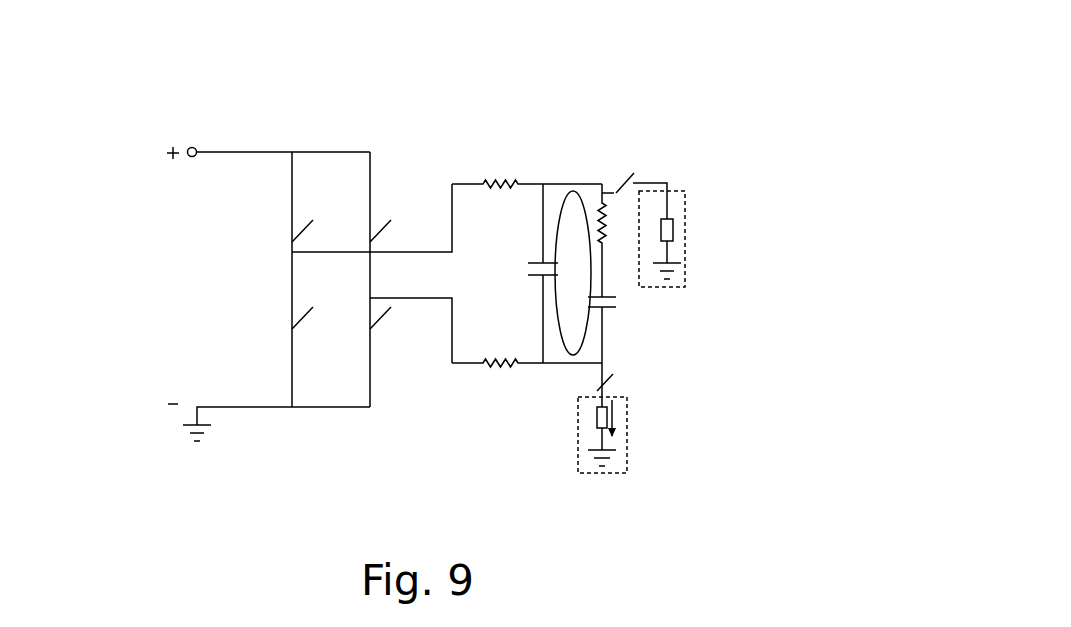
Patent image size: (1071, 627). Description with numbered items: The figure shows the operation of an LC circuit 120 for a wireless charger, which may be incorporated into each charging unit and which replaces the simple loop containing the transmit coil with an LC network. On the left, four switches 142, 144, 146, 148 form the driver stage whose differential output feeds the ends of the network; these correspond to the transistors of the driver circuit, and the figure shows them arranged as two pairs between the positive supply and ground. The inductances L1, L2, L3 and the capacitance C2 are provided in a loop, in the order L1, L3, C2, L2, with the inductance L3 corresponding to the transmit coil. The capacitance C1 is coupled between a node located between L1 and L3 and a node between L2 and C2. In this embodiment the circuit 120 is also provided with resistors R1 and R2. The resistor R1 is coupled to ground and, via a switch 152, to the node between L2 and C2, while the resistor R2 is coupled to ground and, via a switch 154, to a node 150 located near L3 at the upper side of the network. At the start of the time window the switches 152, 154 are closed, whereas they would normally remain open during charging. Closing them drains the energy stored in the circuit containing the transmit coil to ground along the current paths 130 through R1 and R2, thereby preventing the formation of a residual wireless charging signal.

The LC circuit 120 is at (581, 205).
The current paths 130 is at (642, 248).
The first switch 142 is at (303, 217).
The second switch 144 is at (307, 330).
The third switch 146 is at (383, 217).
The fourth switch 148 is at (385, 330).
The node 150 is at (612, 193).
The switch 152 is at (616, 377).
The switch 154 is at (644, 176).
The inductance L1 is at (500, 178).
The inductance L2 is at (527, 345).
The inductance L3 is at (600, 210).
The capacitance C1 is at (514, 273).
The capacitance C2 is at (629, 331).
The resistor R1 is at (594, 418).
The resistor R2 is at (671, 237).